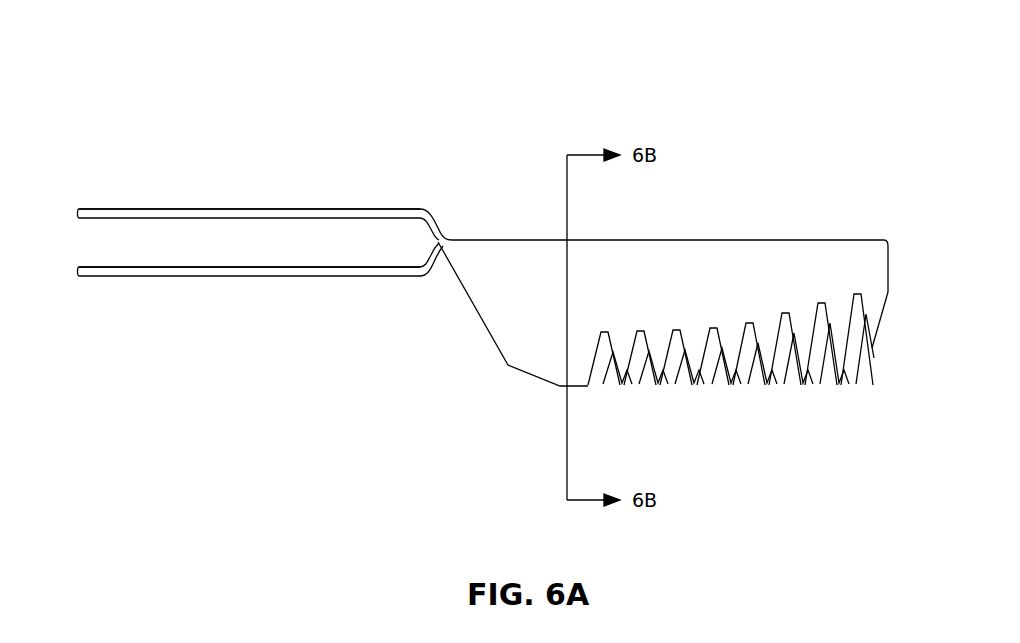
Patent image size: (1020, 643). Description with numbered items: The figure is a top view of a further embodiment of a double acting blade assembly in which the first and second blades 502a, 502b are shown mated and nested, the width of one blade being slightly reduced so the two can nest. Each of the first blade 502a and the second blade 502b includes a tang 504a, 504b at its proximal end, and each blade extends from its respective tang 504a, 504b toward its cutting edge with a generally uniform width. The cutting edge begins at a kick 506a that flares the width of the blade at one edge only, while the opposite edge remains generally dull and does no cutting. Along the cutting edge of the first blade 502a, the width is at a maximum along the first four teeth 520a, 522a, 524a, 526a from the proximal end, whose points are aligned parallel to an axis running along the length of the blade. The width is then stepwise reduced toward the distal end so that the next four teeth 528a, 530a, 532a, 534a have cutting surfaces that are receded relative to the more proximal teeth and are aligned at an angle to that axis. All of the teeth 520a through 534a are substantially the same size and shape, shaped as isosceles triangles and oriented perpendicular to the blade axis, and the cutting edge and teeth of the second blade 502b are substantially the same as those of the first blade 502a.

The first blade 502a is at (377, 190).
The second blade 502b is at (393, 293).
The tang 504a is at (198, 212).
The tang 504b is at (203, 270).
The kick 506a is at (529, 357).
The tooth 520a is at (624, 366).
The tooth 522a is at (655, 352).
The tooth 524a is at (697, 360).
The tooth 526a is at (734, 352).
The tooth 528a is at (766, 345).
The tooth 530a is at (803, 345).
The tooth 532a is at (839, 335).
The tooth 534a is at (871, 328).